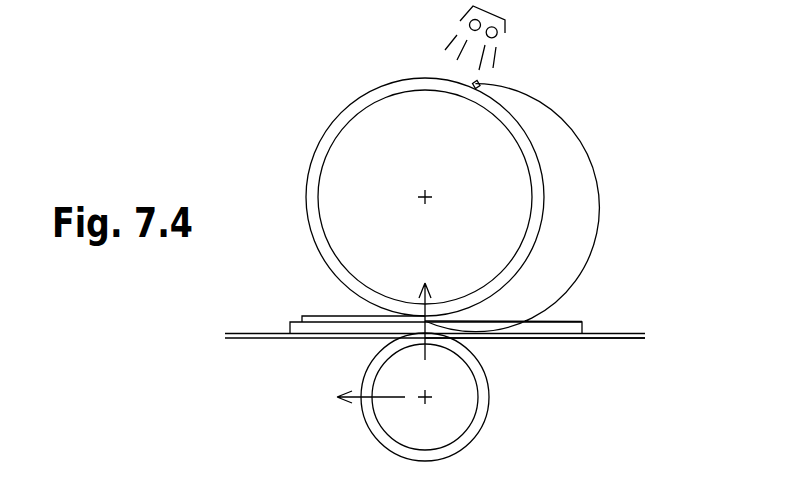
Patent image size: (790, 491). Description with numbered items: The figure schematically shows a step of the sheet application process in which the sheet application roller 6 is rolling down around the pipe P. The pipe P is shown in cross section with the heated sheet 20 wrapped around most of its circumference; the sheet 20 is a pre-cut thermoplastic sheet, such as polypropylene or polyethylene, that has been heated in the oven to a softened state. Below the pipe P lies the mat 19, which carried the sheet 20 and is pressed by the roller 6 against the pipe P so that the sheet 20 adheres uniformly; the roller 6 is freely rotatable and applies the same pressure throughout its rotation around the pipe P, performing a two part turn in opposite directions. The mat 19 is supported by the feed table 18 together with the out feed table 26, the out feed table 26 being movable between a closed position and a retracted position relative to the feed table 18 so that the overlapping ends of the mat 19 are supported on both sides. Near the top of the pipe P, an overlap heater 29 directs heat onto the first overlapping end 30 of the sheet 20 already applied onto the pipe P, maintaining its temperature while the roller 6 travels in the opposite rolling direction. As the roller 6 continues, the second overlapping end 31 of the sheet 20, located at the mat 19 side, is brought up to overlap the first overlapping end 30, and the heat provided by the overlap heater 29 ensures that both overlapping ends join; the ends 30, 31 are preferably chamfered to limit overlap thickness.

The pipe P is at (314, 183).
The sheet 20 is at (542, 237).
The first overlapping end 30 is at (479, 83).
The overlap heater 29 is at (502, 33).
The second overlapping end 31 is at (320, 320).
The mat 19 is at (300, 325).
The feed table 18 is at (250, 338).
The out feed table 26 is at (528, 338).
The sheet application roller 6 is at (475, 423).